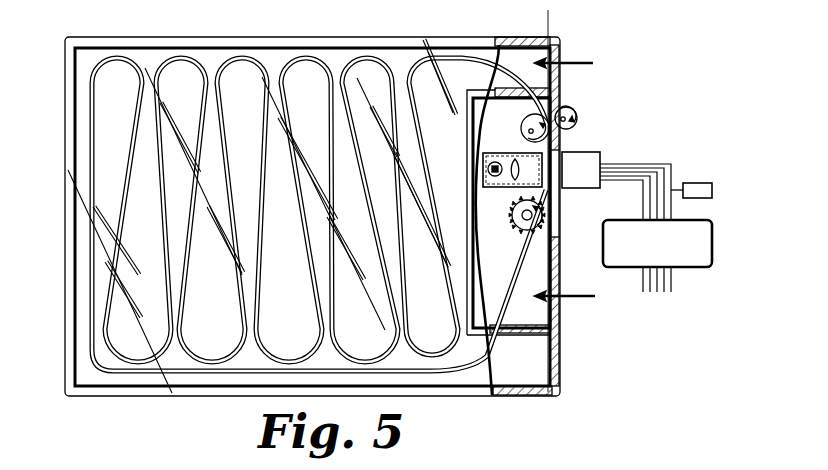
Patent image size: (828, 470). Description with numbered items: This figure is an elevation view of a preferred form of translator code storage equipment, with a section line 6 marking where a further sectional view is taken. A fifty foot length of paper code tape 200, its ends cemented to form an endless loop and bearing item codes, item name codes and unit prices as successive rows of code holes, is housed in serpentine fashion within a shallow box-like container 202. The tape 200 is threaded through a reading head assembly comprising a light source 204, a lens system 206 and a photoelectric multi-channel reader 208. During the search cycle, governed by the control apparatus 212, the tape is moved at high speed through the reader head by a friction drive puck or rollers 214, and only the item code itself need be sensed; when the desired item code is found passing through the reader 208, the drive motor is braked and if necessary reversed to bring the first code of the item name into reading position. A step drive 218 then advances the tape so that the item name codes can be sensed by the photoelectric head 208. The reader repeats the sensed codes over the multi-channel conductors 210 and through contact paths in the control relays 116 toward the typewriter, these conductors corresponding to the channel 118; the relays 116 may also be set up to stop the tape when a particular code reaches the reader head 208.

The section line 6- 6 is at (578, 201).
The control relays 116 is at (657, 243).
The channel 118 is at (662, 283).
The paper code tape 200 is at (121, 203).
The box-like container 202 is at (66, 276).
The light source 204 is at (490, 165).
The lens system 206 is at (518, 158).
The photoelectric multi-channel reader 208 is at (584, 157).
The multi-channel conductors 210 is at (647, 163).
The search cycle control apparatus 212 is at (701, 184).
The friction drive puck or rollers 214 is at (578, 113).
The step drive 218 is at (521, 228).